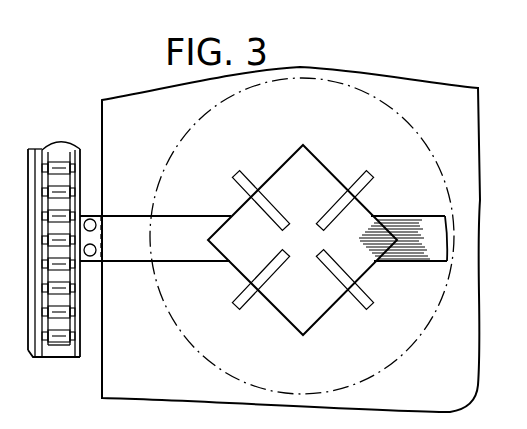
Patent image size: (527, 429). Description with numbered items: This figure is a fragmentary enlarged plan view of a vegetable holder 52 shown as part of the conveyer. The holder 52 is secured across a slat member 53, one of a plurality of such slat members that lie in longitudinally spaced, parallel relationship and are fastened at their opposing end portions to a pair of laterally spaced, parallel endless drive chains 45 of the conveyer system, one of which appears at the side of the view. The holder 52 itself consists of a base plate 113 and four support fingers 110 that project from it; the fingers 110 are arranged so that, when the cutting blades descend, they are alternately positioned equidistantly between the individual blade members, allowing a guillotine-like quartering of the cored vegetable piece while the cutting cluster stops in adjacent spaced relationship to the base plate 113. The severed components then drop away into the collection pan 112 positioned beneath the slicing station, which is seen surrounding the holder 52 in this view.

The endless drive chain 45 is at (56, 166).
The vegetable holder 52 is at (360, 213).
The slat member 53 is at (404, 256).
The support fingers 110 is at (352, 180).
The collection pan 112 is at (434, 390).
The base plate 113 is at (305, 321).